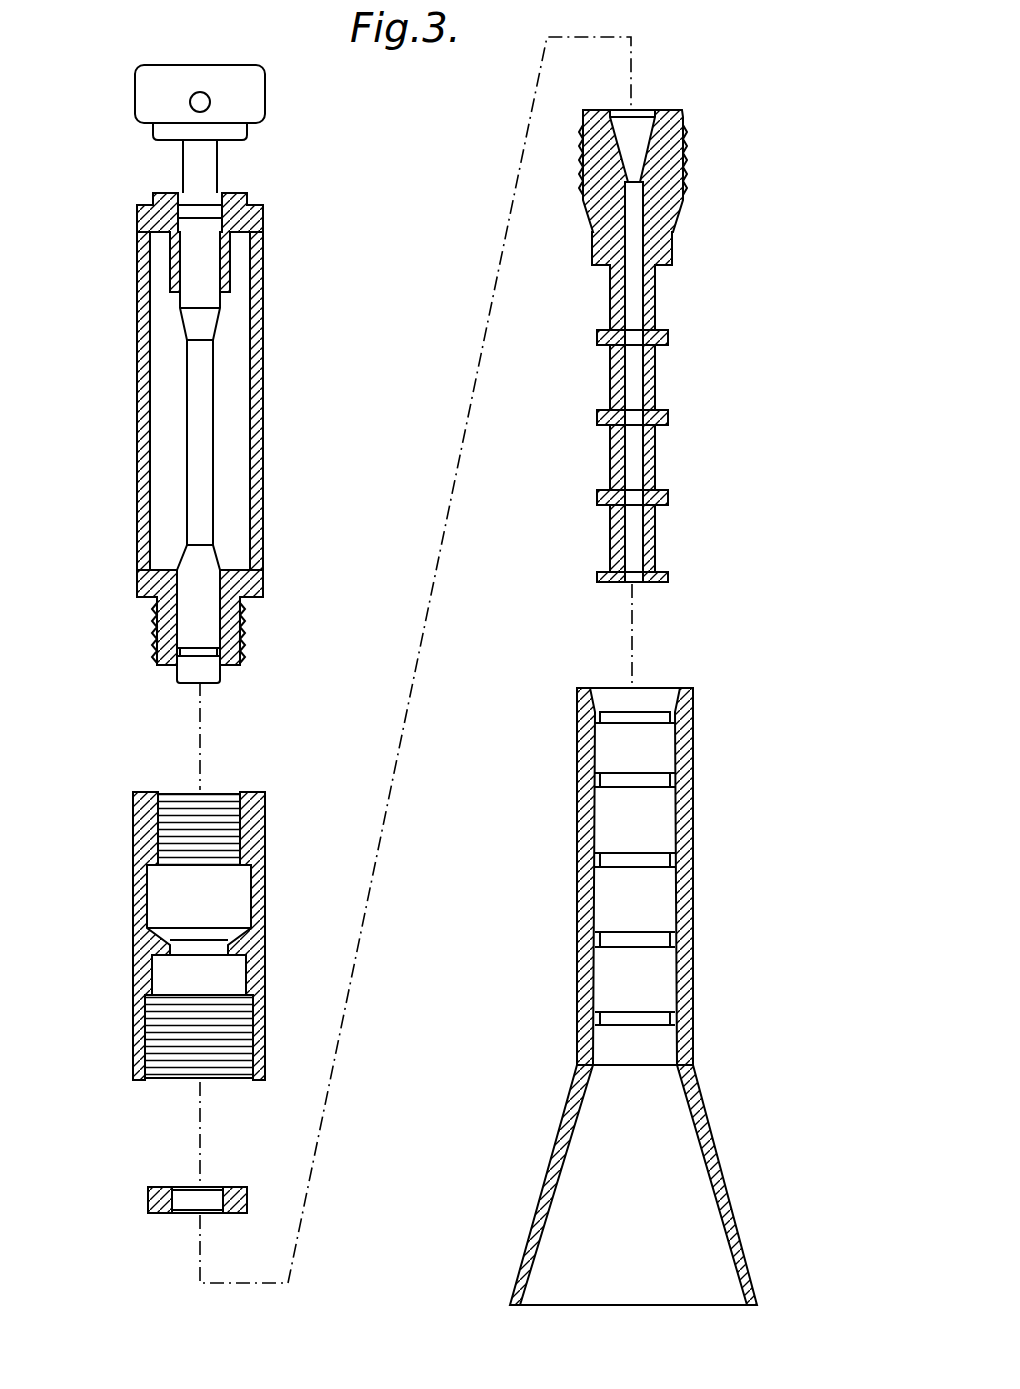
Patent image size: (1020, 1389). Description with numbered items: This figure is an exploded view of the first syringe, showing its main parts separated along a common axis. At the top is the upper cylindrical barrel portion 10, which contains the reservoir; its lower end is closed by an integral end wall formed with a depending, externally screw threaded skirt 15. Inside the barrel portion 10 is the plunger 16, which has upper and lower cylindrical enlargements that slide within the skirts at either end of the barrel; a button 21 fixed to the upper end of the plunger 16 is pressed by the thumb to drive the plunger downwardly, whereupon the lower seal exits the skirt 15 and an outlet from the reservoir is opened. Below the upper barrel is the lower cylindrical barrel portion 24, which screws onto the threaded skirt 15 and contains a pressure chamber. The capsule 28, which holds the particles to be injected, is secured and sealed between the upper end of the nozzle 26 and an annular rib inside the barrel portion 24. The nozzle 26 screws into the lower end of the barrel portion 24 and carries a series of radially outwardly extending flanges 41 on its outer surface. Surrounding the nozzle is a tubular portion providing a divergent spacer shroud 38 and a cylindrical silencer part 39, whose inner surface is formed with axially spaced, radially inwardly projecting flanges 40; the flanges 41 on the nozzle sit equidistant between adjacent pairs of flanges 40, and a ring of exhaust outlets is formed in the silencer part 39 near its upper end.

The upper cylindrical barrel portion 10 is at (258, 270).
The externally screw threaded skirt 15 is at (228, 637).
The plunger 16 is at (202, 430).
The button 21 is at (248, 87).
The lower cylindrical barrel portion 24 is at (262, 897).
The nozzle 26 is at (655, 465).
The capsule 28 is at (148, 1197).
The divergent spacer shroud 38 is at (712, 1140).
The cylindrical silencer part 39 is at (693, 800).
The radially inwardly projecting flanges 40 is at (605, 715).
The radially outwardly extending flanges 41 is at (660, 342).